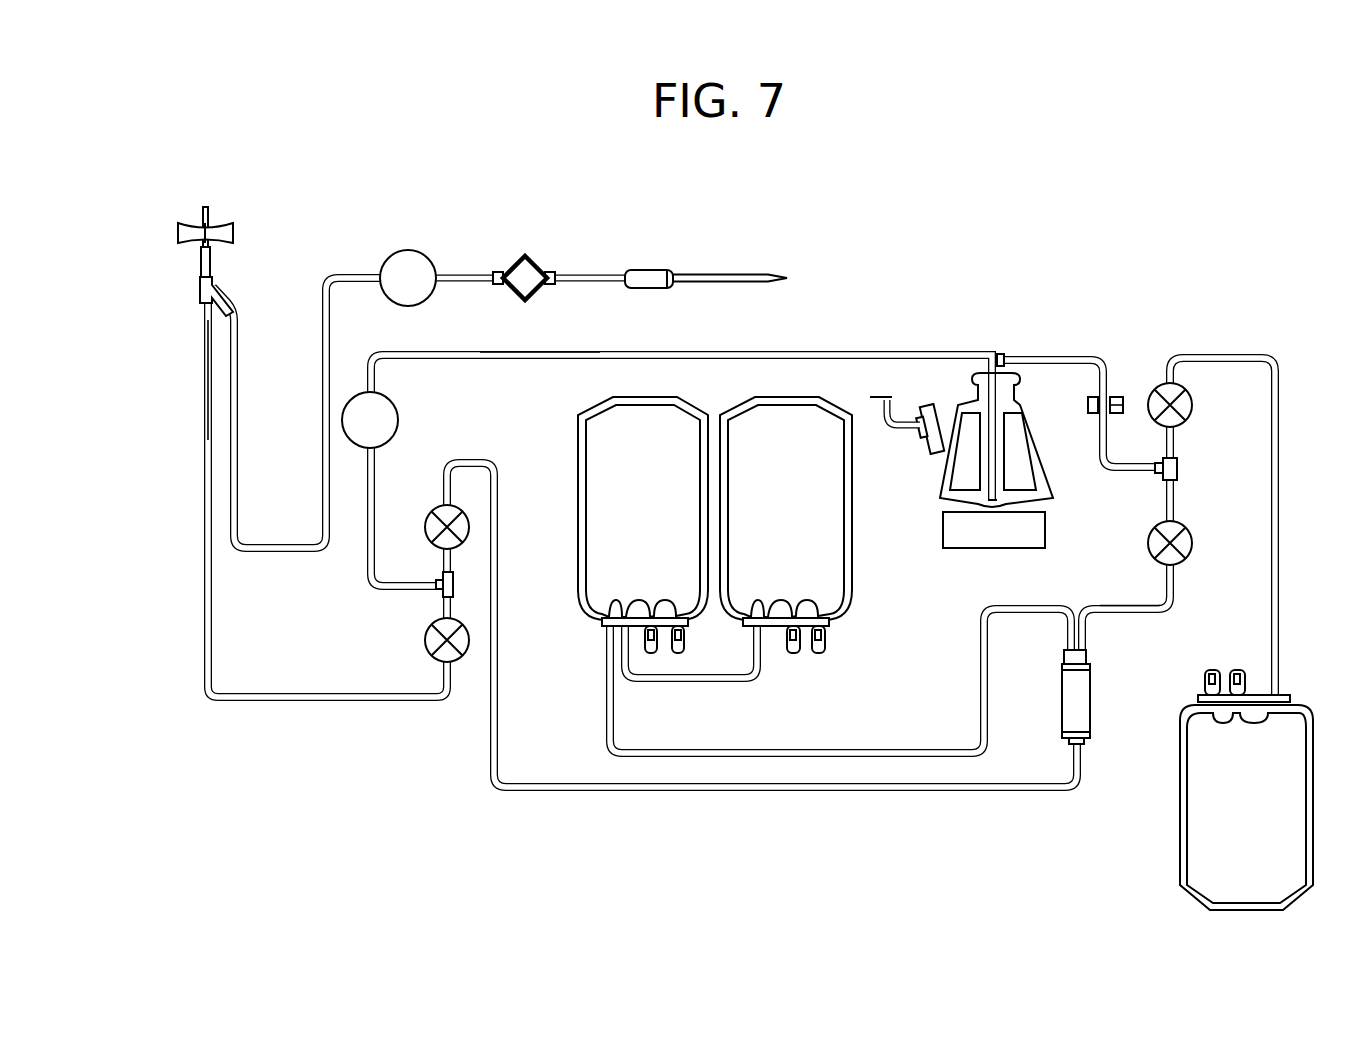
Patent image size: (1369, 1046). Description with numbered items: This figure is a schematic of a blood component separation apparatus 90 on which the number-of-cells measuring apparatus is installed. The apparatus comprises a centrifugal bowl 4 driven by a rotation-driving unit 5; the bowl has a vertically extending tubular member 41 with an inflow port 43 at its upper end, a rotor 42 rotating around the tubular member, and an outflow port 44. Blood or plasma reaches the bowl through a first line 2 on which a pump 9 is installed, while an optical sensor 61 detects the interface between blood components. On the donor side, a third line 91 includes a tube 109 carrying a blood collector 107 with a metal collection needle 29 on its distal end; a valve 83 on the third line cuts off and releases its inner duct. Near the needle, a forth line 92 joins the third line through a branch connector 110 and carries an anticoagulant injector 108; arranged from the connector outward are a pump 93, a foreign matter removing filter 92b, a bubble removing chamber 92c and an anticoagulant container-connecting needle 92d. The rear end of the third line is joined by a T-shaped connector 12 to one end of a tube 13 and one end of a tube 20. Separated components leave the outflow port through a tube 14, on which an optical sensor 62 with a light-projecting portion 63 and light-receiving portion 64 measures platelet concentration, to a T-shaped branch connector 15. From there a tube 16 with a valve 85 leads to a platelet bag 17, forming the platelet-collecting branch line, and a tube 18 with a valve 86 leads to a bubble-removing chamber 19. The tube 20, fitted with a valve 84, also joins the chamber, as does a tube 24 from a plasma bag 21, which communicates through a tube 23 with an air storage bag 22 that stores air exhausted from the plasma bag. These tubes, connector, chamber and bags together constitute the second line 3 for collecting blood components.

The first line 2 is at (476, 358).
The second line 3 is at (1137, 614).
The centrifugal bowl 4 is at (1030, 407).
The rotation-driving unit 5 is at (972, 540).
The pump 9 is at (389, 408).
The branch connector 12 is at (453, 585).
The tube 13 is at (655, 352).
The tube 14 is at (1097, 357).
The T-shaped branch connector 15 is at (1180, 472).
The tube 16 is at (1232, 356).
The platelet bag 17 is at (1200, 820).
The tube 18 is at (1131, 605).
The bubble-removing chamber 19 is at (1063, 692).
The tube 20 is at (562, 782).
The plasma bag 21 is at (605, 455).
The air storage bag 22 is at (838, 545).
The tube 23 is at (712, 682).
The tube 24 is at (938, 750).
The collection needle 29 is at (236, 230).
The tubular member 41 is at (995, 478).
The rotor 42 is at (943, 493).
The inflow port 43 is at (966, 354).
The outflow port 44 is at (1001, 354).
The optical sensor 61 is at (934, 405).
The optical sensor 62 is at (1117, 394).
The light-projecting portion 63 is at (1118, 397).
The light-receiving portion 64 is at (1091, 397).
The valve 83 is at (427, 640).
The valve 84 is at (440, 505).
The valve 85 is at (1188, 410).
The valve 86 is at (1148, 542).
The blood component separation apparatus 90 is at (1037, 840).
The third line 91 is at (206, 508).
The forth line 92 is at (324, 339).
The foreign matter removing filter 92b is at (514, 263).
The bubble removing chamber 92c is at (650, 272).
The anticoagulant container-connecting needle 92d is at (770, 278).
The pump 93 is at (388, 262).
The blood collector 107 is at (205, 259).
The anticoagulant injector 108 is at (589, 280).
The tube 109 is at (204, 382).
The branch connector 110 is at (204, 294).